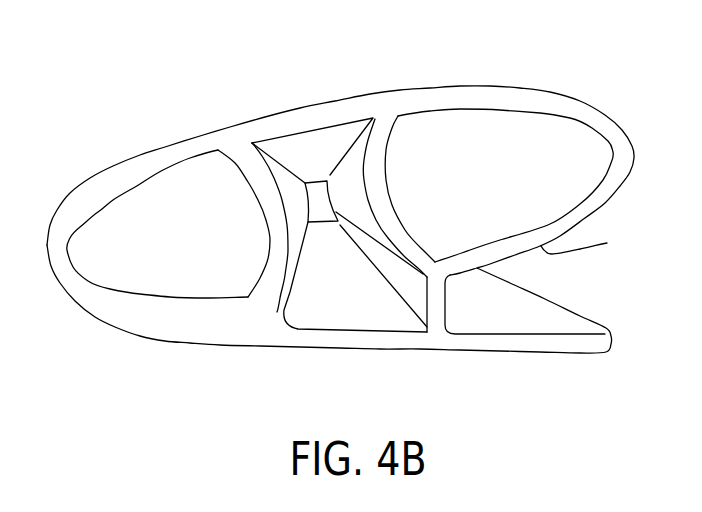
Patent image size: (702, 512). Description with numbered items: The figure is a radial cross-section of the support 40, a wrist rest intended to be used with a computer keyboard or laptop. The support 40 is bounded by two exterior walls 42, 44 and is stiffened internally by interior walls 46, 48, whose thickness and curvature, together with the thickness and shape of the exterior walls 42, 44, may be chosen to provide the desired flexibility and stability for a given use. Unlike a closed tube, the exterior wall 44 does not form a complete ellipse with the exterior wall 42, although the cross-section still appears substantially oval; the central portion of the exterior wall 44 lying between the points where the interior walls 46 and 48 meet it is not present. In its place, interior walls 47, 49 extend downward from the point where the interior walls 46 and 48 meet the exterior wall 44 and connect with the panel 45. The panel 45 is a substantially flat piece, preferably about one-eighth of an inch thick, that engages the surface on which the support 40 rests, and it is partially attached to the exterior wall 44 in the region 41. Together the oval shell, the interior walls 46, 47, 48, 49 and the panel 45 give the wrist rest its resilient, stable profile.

The support 40 is at (168, 97).
The region 41 is at (137, 325).
The exterior wall 42 is at (102, 183).
The exterior wall 44 is at (607, 243).
The panel 45 is at (577, 344).
The interior wall 46 is at (382, 132).
The interior wall 47 is at (433, 312).
The interior wall 48 is at (277, 247).
The interior wall 49 is at (278, 306).